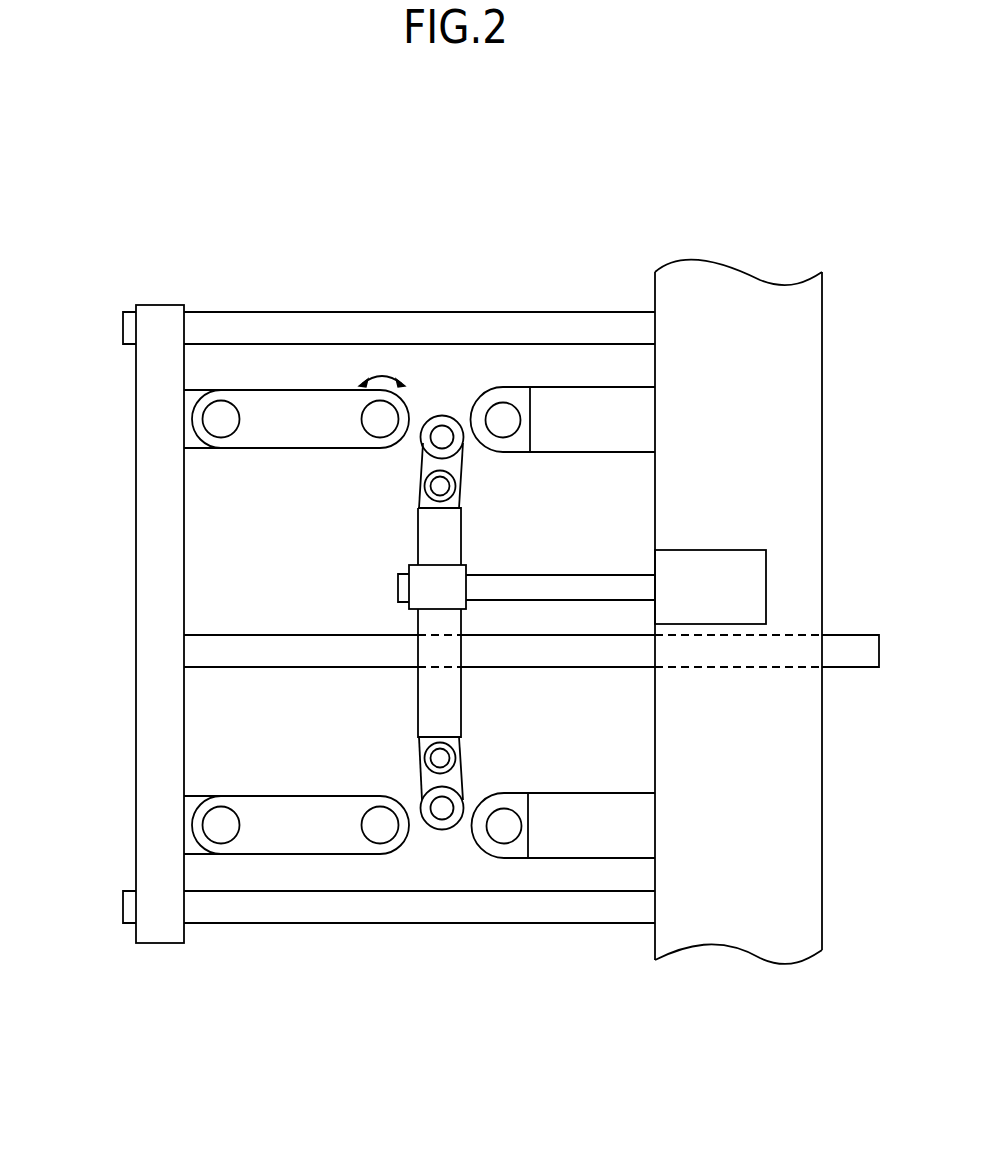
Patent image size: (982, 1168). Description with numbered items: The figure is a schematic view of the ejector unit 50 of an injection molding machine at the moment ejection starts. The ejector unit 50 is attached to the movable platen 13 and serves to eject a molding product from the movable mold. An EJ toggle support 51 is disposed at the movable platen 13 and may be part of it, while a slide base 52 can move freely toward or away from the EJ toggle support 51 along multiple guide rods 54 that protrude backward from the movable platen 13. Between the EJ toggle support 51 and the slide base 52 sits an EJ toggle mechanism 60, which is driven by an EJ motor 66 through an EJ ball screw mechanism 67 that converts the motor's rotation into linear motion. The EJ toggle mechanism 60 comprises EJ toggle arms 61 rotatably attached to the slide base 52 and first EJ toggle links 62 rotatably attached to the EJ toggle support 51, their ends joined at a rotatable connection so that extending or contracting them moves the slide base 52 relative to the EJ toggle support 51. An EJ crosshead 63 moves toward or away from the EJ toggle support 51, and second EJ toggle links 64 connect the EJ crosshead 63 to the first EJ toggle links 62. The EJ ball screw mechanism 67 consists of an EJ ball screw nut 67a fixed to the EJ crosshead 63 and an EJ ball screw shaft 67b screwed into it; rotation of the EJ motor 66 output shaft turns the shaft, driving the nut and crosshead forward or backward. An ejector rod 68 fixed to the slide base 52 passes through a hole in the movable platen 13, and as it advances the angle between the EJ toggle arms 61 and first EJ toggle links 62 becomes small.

The movable platen 13 is at (732, 290).
The ejector unit 50 is at (102, 277).
The EJ toggle support 51 is at (623, 404).
The slide base 52 is at (147, 551).
The guide rods 54 is at (422, 320).
The EJ toggle mechanism 60 is at (333, 364).
The EJ toggle arms 61 is at (290, 442).
The first EJ toggle links 62 is at (440, 400).
The EJ crosshead 63 is at (452, 695).
The second EJ toggle links 64 is at (430, 455).
The EJ motor 66 is at (703, 553).
The EJ ball screw mechanism 67 is at (582, 517).
The EJ ball screw nut 67a is at (452, 582).
The EJ ball screw shaft 67b is at (533, 583).
The ejector rod 68 is at (850, 640).